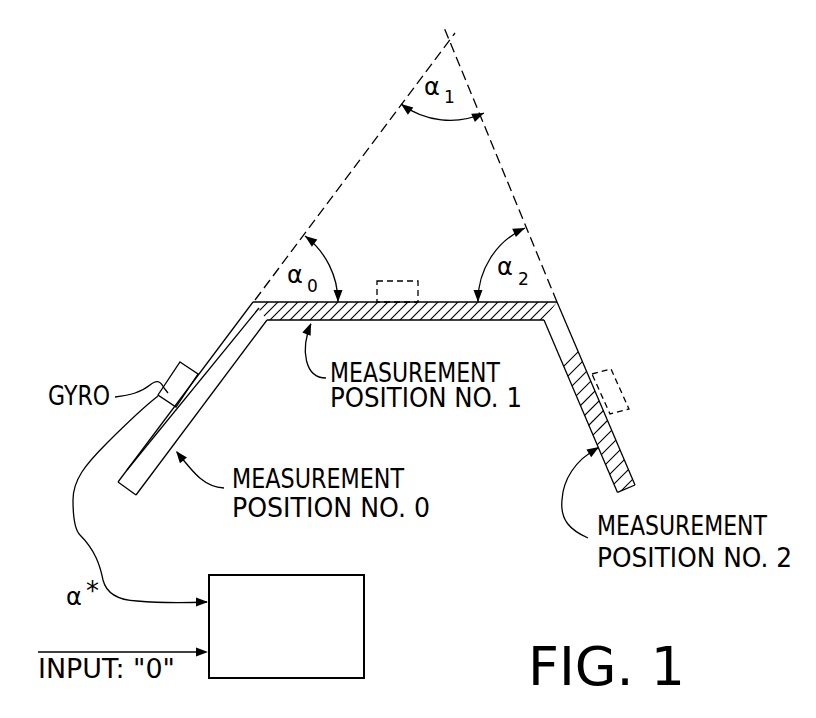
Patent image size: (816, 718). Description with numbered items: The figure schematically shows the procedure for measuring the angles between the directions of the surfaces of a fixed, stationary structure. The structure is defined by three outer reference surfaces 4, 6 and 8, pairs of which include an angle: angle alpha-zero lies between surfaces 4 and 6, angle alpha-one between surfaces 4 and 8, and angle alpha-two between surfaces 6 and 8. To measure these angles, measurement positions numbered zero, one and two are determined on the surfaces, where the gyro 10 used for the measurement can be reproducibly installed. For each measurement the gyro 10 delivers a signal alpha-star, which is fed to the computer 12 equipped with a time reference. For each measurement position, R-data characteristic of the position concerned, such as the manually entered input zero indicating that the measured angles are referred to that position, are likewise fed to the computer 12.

The outer surface 4 is at (249, 308).
The outer surface 6 is at (534, 301).
The outer surface 8 is at (629, 437).
The gyro 10 is at (181, 362).
The computer 12 is at (364, 590).